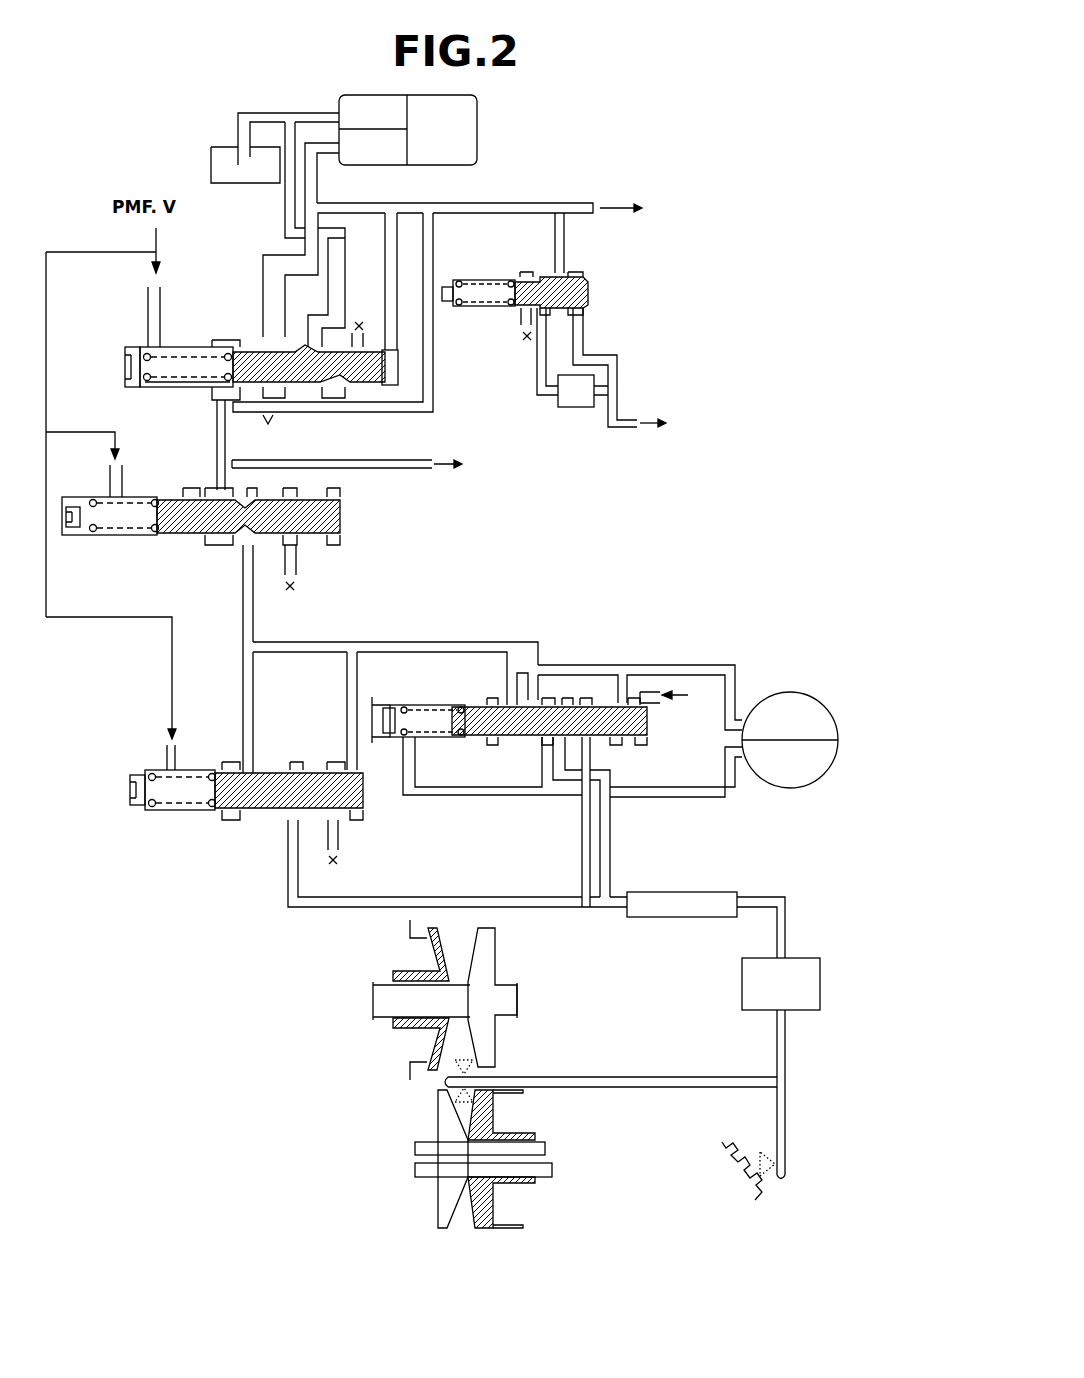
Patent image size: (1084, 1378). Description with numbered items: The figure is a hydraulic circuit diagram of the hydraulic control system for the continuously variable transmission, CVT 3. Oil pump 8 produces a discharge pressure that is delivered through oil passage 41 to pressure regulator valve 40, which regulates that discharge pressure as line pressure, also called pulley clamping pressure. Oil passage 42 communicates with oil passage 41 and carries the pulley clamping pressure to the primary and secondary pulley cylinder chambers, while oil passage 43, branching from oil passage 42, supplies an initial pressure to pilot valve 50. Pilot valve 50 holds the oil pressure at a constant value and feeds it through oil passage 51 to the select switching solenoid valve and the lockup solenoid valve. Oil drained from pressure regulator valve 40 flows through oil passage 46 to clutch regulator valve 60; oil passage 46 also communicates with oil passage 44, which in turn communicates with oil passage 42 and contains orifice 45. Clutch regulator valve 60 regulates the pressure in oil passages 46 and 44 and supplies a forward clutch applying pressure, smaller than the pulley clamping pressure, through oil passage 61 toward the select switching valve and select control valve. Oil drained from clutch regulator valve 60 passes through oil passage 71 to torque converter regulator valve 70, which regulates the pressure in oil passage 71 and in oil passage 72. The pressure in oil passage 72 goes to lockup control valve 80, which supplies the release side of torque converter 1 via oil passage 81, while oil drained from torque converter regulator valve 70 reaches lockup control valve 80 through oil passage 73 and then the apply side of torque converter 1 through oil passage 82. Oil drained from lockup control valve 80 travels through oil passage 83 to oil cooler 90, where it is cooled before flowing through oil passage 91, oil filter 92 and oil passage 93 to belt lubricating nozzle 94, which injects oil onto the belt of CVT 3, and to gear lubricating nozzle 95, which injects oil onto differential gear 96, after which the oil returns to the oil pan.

The torque converter 1 is at (798, 684).
The CVT 3 is at (419, 1197).
The oil pump 8 is at (477, 130).
The pressure regulator valve 40 is at (381, 398).
The oil passage 41 is at (318, 188).
The oil passage 42 is at (524, 203).
The oil passage 43 is at (564, 246).
The oil passage 44 is at (433, 368).
The orifice 45 is at (276, 437).
The oil passage 46 is at (217, 441).
The pilot valve 50 is at (604, 290).
The oil passage 51 is at (618, 392).
The clutch regulator valve 60 is at (168, 558).
The oil passage 61 is at (350, 460).
The torque converter regulator valve 70 is at (207, 838).
The oil passage 71 is at (255, 700).
The oil passage 72 is at (384, 642).
The oil passage 73 is at (380, 897).
The lockup control valve 80 is at (469, 696).
The oil passage 81 is at (640, 665).
The oil passage 82 is at (622, 800).
The oil passage 83 is at (612, 862).
The oil cooler 90 is at (714, 892).
The oil passage 91 is at (760, 897).
The oil filter 92 is at (742, 984).
The oil passage 93 is at (614, 1073).
The belt lubricating nozzle 94 is at (430, 1085).
The gear lubricating nozzle 95 is at (793, 1154).
The differential gear 96 is at (722, 1127).